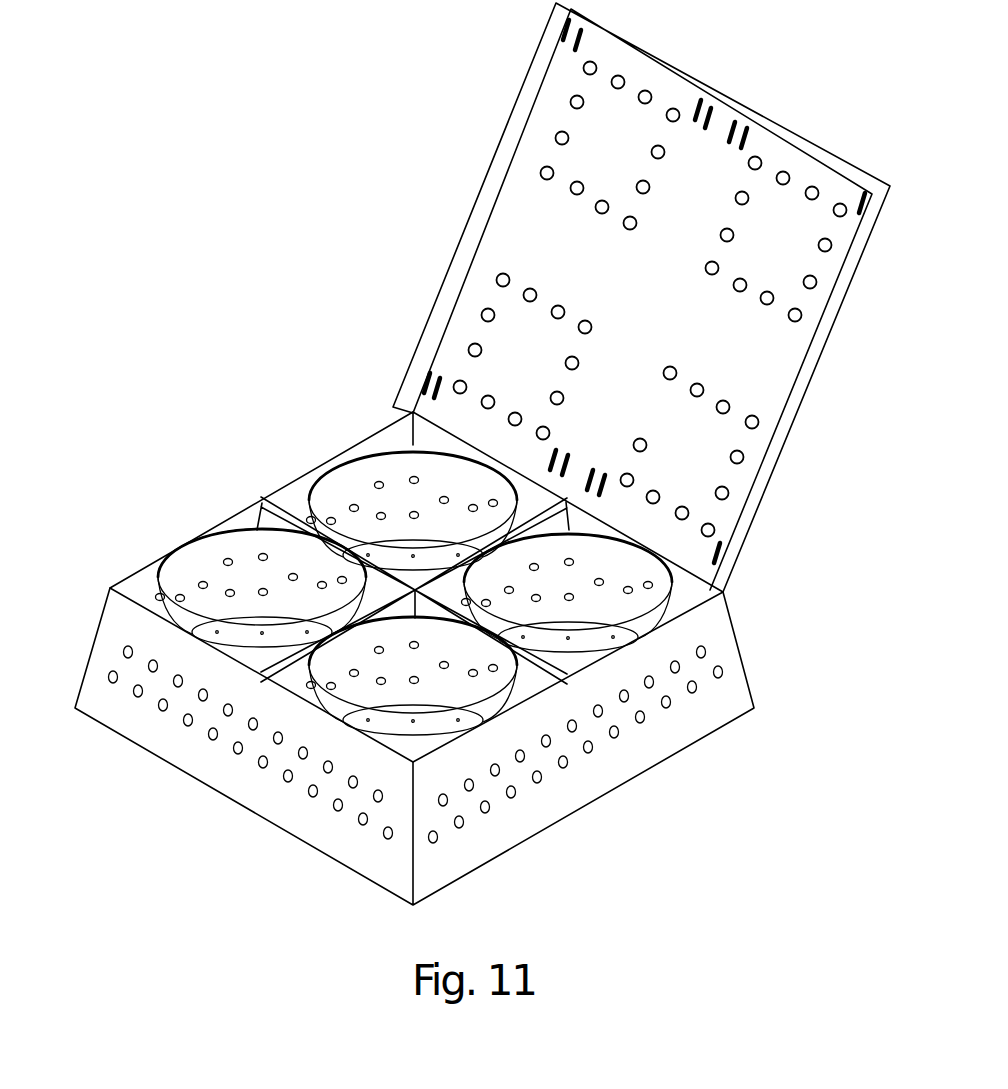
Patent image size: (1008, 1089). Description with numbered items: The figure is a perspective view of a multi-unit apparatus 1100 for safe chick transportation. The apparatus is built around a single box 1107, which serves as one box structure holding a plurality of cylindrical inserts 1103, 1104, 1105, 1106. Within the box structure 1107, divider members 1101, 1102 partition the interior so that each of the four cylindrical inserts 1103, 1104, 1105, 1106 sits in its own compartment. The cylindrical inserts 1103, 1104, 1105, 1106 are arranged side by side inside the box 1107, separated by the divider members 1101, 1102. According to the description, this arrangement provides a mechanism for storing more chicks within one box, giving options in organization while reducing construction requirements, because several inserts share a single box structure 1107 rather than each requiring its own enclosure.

The multi-unit apparatus 1100 is at (193, 65).
The divider member 1101 is at (290, 678).
The divider member 1102 is at (537, 675).
The cylindrical insert 1103 is at (203, 565).
The cylindrical insert 1104 is at (357, 483).
The cylindrical insert 1105 is at (647, 600).
The cylindrical insert 1106 is at (453, 697).
The box 1107 is at (135, 745).